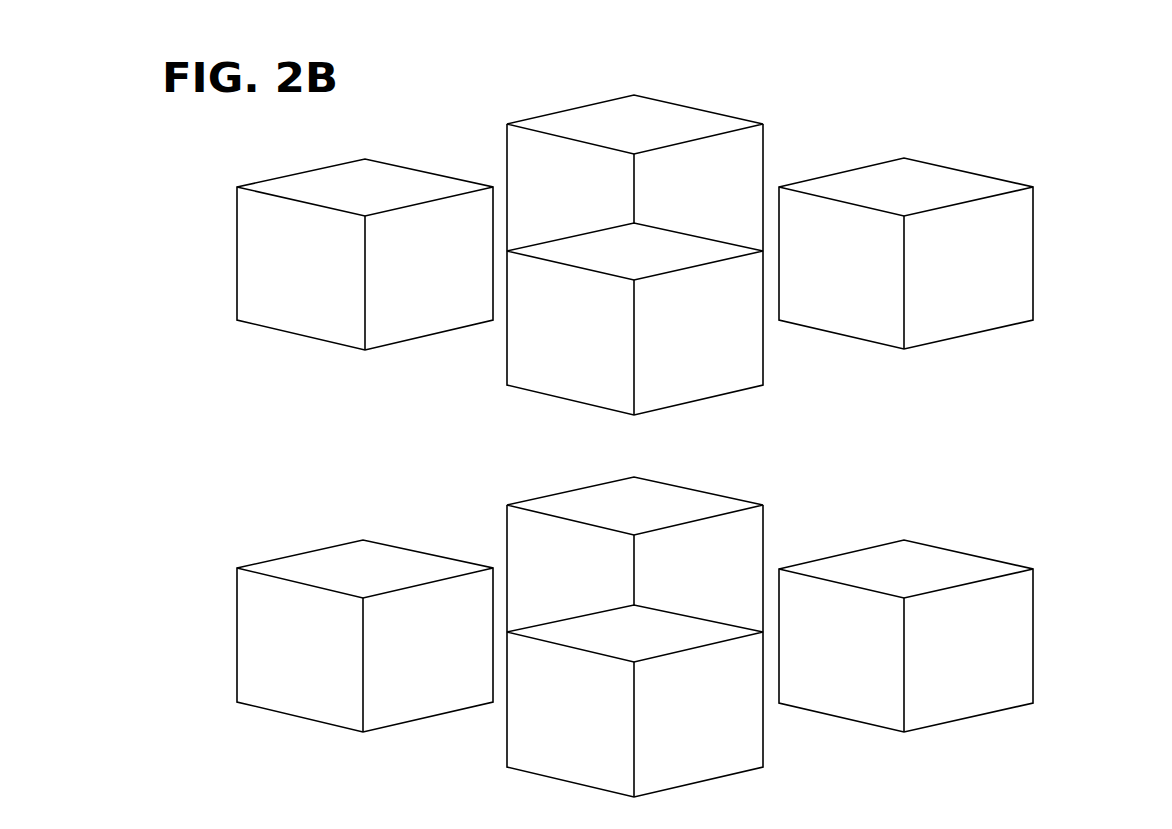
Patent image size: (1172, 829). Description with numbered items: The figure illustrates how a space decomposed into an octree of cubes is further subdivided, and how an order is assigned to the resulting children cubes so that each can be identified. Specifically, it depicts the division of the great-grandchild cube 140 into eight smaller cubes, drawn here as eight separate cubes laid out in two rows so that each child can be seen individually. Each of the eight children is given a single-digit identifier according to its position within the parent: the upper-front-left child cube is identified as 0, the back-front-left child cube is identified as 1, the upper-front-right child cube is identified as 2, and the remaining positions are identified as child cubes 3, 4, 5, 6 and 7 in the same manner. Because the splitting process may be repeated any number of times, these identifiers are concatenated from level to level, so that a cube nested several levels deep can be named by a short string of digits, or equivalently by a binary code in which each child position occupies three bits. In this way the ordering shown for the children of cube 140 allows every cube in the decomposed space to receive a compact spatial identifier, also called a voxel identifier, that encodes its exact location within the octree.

The great-grandchild cube 140 is at (1100, 171).
The upper-front-left child cube 0 is at (365, 254).
The back-front-left child cube 1 is at (635, 173).
The upper-front-right child cube 2 is at (635, 319).
The child cube 3 is at (906, 253).
The child cube 4 is at (365, 636).
The child cube 5 is at (635, 554).
The child cube 6 is at (635, 701).
The child cube 7 is at (906, 636).